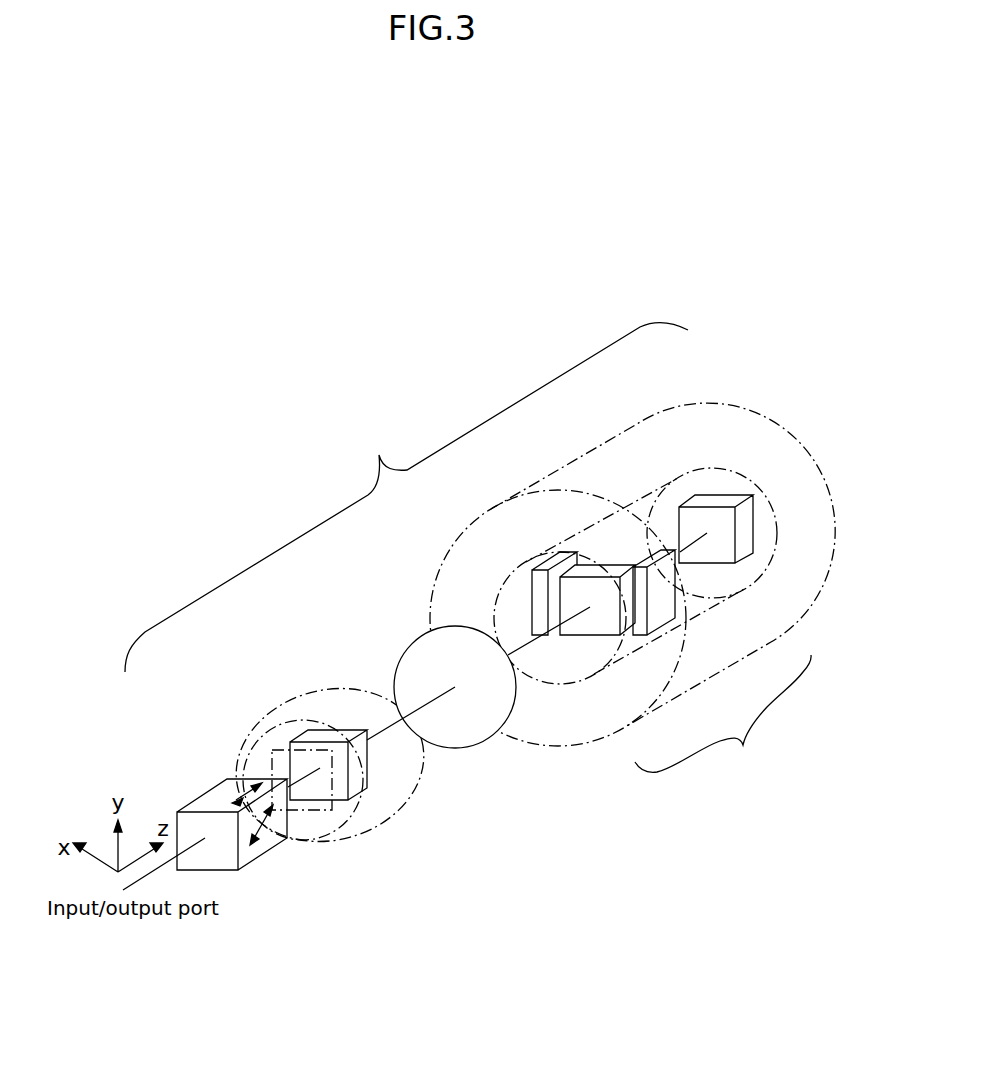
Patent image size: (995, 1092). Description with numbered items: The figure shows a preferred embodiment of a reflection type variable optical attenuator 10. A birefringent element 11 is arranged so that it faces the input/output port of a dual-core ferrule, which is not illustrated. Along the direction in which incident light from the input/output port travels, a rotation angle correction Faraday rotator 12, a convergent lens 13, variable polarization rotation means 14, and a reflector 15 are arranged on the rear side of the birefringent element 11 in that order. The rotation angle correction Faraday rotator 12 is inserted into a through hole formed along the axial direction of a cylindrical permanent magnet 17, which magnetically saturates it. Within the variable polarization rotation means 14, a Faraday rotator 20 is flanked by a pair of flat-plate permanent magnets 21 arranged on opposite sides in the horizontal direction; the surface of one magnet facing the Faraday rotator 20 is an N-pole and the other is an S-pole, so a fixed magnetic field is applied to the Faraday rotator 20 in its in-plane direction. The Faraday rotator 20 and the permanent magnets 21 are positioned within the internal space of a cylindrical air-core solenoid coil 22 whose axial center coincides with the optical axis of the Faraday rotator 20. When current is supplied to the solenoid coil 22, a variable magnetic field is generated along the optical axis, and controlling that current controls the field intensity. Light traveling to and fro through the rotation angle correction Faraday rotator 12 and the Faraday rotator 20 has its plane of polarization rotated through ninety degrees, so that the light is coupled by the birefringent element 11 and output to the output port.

The reflection type variable optical attenuator 10 is at (355, 432).
The birefringent element 11 is at (252, 870).
The rotation angle correction Faraday rotator 12 is at (365, 774).
The convergent lens 13 is at (400, 664).
The variable polarization rotation means 14 is at (761, 756).
The reflector 15 is at (713, 497).
The cylindrical permanent magnet 17 is at (360, 817).
The Faraday rotator 20 is at (592, 590).
The permanent magnets 21 is at (540, 603).
The solenoid coil 22 is at (601, 446).